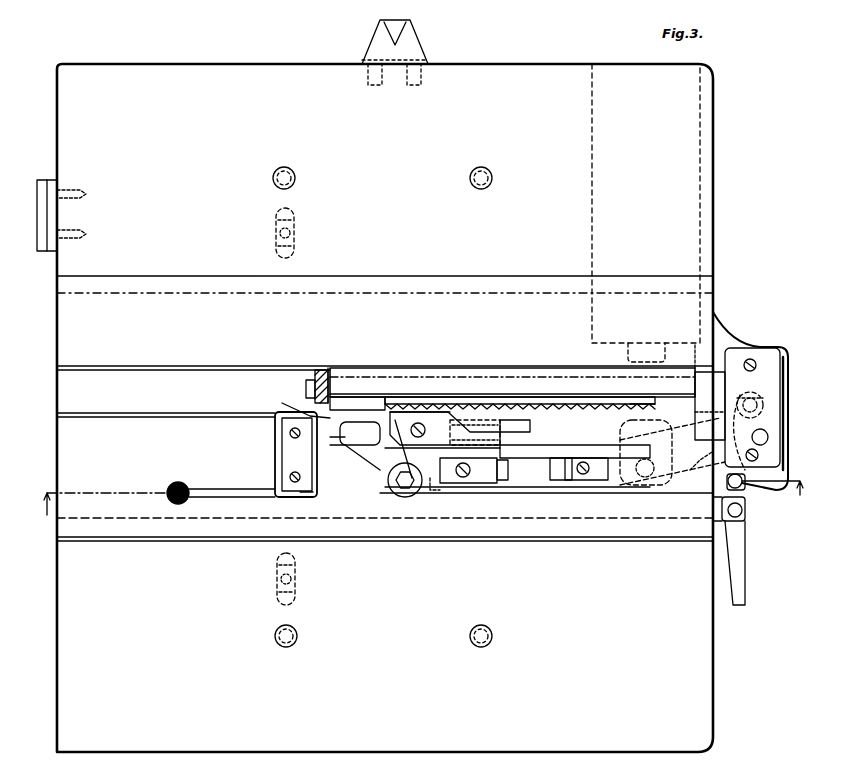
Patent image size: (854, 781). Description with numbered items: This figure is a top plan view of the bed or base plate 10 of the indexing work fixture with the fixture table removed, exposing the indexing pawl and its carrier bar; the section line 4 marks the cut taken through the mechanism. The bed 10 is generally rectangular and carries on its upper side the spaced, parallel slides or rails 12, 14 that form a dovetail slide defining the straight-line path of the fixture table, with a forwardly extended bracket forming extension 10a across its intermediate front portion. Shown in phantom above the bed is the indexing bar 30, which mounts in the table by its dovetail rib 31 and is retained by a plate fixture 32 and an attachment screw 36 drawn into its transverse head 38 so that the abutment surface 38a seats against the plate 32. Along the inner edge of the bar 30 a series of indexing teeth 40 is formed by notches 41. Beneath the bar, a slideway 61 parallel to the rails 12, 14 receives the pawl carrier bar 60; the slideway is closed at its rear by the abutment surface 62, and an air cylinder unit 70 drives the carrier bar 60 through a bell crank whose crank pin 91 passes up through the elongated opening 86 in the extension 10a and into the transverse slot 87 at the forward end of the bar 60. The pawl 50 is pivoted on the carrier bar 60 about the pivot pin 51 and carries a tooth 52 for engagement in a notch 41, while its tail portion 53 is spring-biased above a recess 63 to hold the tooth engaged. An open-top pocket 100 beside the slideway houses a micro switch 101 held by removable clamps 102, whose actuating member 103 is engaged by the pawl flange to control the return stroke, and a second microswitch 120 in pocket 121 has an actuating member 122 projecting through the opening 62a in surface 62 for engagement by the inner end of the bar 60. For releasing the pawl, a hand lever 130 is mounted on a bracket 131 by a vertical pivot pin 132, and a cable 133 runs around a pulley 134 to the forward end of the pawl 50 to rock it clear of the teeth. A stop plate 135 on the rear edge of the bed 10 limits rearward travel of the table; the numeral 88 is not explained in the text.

The bed or base plate 10 is at (717, 725).
The bracket forming extension 10a is at (742, 348).
The slide or rail 12 is at (346, 526).
The slide or rail 14 is at (136, 300).
The indexing bar 30 is at (398, 375).
The dovetail rib 31 is at (425, 392).
The plate fixture 32 is at (322, 370).
The attachment screw 36 is at (296, 386).
The transverse head 38 is at (345, 375).
The abutment surface 38a is at (332, 368).
The indexing teeth 40 is at (528, 406).
The notches 41 is at (472, 404).
The pawl 50 is at (450, 455).
The pivot pin 51 is at (445, 428).
The pawl tooth 52 is at (390, 412).
The tail portion 53 is at (464, 428).
The pawl carrier bar 60 is at (572, 416).
The slideway 61 is at (693, 360).
The abutment surface 62 is at (490, 430).
The opening 62a is at (355, 455).
The recess or cut out portion 63 is at (512, 432).
The air cylinder unit 70 is at (700, 166).
The elongated opening 86 is at (780, 405).
The slot 87 is at (710, 406).
The roller 88 is at (770, 432).
The crank pin 91 is at (710, 407).
The pocket or recess 100 is at (566, 450).
The micro switch 101 is at (540, 485).
The removable clamps 102 is at (463, 484).
The actuating member 103 is at (560, 470).
The microswitch 120 is at (280, 458).
The pocket or recess 121 is at (278, 443).
The switch actuating member 122 is at (360, 433).
The hand lever 130 is at (745, 600).
The bracket 131 is at (745, 522).
The pivot pin 132 is at (745, 510).
The cable 133 is at (750, 488).
The pulley 134 is at (402, 497).
The stop bracket or plate 135 is at (46, 192).
The section line 4- 4 is at (422, 505).